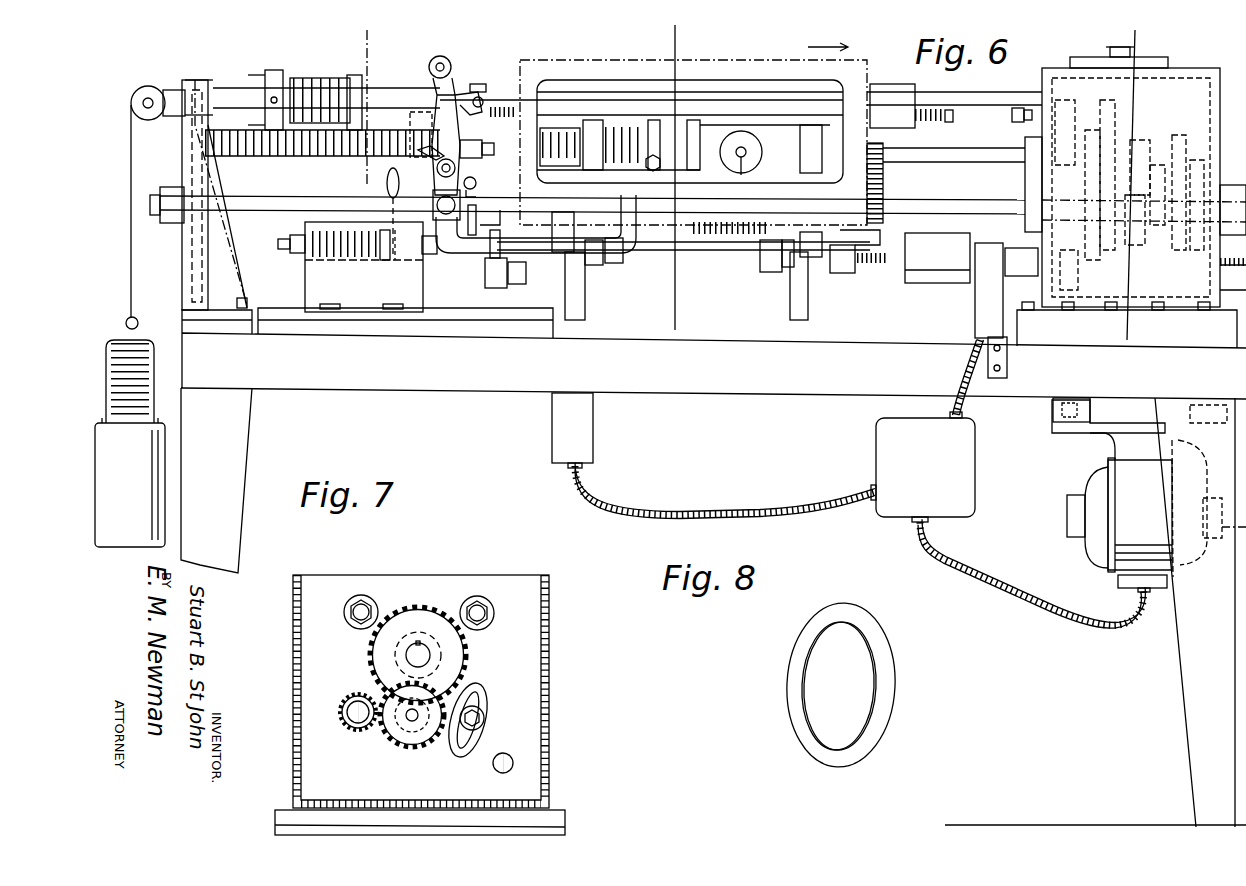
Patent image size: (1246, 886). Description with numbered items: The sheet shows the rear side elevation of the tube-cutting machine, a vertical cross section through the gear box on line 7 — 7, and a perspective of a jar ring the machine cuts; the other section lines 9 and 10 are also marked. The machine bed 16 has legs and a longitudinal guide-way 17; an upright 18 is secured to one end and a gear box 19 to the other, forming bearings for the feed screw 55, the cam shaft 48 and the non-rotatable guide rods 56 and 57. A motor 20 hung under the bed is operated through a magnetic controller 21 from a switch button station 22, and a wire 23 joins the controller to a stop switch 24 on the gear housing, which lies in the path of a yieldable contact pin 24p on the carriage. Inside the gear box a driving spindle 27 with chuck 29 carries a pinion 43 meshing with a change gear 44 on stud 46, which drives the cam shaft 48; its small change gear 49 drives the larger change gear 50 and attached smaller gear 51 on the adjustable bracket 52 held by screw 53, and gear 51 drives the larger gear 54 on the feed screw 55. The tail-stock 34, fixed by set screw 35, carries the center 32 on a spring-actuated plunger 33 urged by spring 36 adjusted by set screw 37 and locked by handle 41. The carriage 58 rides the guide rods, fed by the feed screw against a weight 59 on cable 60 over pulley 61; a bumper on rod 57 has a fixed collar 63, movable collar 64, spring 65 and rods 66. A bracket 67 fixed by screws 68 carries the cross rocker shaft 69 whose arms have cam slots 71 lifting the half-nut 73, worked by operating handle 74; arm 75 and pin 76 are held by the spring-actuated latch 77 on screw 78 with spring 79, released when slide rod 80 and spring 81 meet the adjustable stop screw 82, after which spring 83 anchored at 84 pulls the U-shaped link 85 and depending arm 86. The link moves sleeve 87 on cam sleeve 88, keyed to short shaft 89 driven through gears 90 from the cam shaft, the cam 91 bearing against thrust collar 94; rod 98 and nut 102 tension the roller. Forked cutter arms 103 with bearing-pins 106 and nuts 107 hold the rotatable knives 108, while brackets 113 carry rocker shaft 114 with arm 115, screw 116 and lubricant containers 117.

In FIG. 6, the section line 7- 7 is at (1138, 36).
In FIG. 6, the section line 9- 9 is at (660, 30).
In FIG. 6, the section line 10- 10 is at (365, 30).
In FIG. 6, the machine bed 16 is at (713, 580).
In FIG. 6, the longitudinal guide-way 17 is at (472, 318).
In FIG. 6, the upright 18 is at (192, 252).
In FIG. 6, the gear box 19 is at (1135, 177).
In FIG. 7, the gear box 19 is at (546, 630).
In FIG. 6, the motor 20 is at (1149, 495).
In FIG. 6, the magnetic controller 21 is at (923, 467).
In FIG. 6, the switch button station 22 is at (572, 430).
In FIG. 6, the wire 23 is at (1000, 380).
In FIG. 6, the stop switch 24 is at (978, 300).
In FIG. 6, the yieldable contact pin 24p is at (874, 270).
In FIG. 6, the driving spindle 27 is at (1085, 274).
In FIG. 7, the driving spindle 27 is at (501, 774).
In FIG. 6, the chuck 29 is at (925, 278).
In FIG. 6, the center 32 is at (430, 254).
In FIG. 6, the spring-actuated plunger 33 is at (342, 262).
In FIG. 6, the adjustable tail-stock 34 is at (345, 269).
In FIG. 6, the set screw 35 is at (345, 304).
In FIG. 6, the spring 36 is at (393, 257).
In FIG. 6, the set screw 37 is at (290, 250).
In FIG. 6, the handle 41 is at (384, 213).
In FIG. 6, the pinion 43 is at (1113, 200).
In FIG. 6, the change gear 44 is at (1175, 160).
In FIG. 6, the stud 46 is at (1159, 195).
In FIG. 6, the cam shaft 48 is at (960, 210).
In FIG. 7, the cam shaft 48 is at (350, 704).
In FIG. 6, the small change gear 49 is at (1143, 199).
In FIG. 7, the small change gear 49 is at (348, 725).
In FIG. 6, the larger change gear 50 is at (1144, 165).
In FIG. 7, the larger change gear 50 is at (420, 735).
In FIG. 6, the smaller gear 51 is at (1163, 192).
In FIG. 7, the smaller gear 51 is at (395, 745).
In FIG. 6, the adjustable bracket 52 is at (1079, 195).
In FIG. 7, the adjustable bracket 52 is at (456, 755).
In FIG. 7, the screw 53 is at (484, 717).
In FIG. 6, the larger gear 54 is at (1112, 163).
In FIG. 7, the larger gear 54 is at (468, 640).
In FIG. 6, the feed screw 55 is at (250, 150).
In FIG. 7, the feed screw 55 is at (430, 655).
In FIG. 7, the guide rod 56 is at (488, 608).
In FIG. 6, the guide rod 57 is at (414, 88).
In FIG. 7, the guide rod 57 is at (372, 604).
In FIG. 6, the carriage 58 is at (650, 50).
In FIG. 6, the weight 59 is at (130, 432).
In FIG. 6, the cable 60 is at (133, 227).
In FIG. 6, the pulley 61 is at (152, 112).
In FIG. 6, the fixed collar 63 is at (268, 70).
In FIG. 6, the movable collar 64 is at (362, 75).
In FIG. 6, the spring 65 is at (322, 85).
In FIG. 6, the rods 66 is at (296, 78).
In FIG. 6, the bracket 67 is at (487, 149).
In FIG. 6, the screws 68 is at (477, 186).
In FIG. 6, the cross rocker shaft 69 is at (440, 170).
In FIG. 6, the cam slot 71 is at (486, 149).
In FIG. 6, the half-nut 73 is at (412, 134).
In FIG. 6, the operating handle 74 is at (429, 73).
In FIG. 6, the arm 75 is at (418, 152).
In FIG. 6, the pin 76 is at (468, 92).
In FIG. 6, the spring-actuated latch 77 is at (484, 95).
In FIG. 6, the screw 78 is at (505, 85).
In FIG. 6, the spring 79 is at (520, 105).
In FIG. 6, the slide rod 80 is at (654, 120).
In FIG. 6, the spring 81 is at (885, 110).
In FIG. 6, the adjustable stop screw 82 is at (1018, 108).
In FIG. 6, the spring 83 is at (730, 243).
In FIG. 6, the anchorage point 84 is at (868, 235).
In FIG. 6, the U-shaped link 85 is at (645, 245).
In FIG. 6, the depending arm 86 is at (456, 205).
In FIG. 6, the sleeve 87 is at (660, 150).
In FIG. 6, the cam sleeve 88 is at (615, 127).
In FIG. 6, the short shaft 89 is at (797, 149).
In FIG. 6, the gears 90 is at (884, 186).
In FIG. 6, the cam 91 is at (750, 125).
In FIG. 6, the thrust collar 94 is at (592, 120).
In FIG. 6, the rod 98 is at (741, 172).
In FIG. 6, the nut 102 is at (750, 140).
In FIG. 6, the forked cutter arms 103 is at (616, 265).
In FIG. 6, the bearing-pin 106 is at (605, 255).
In FIG. 6, the nuts 107 is at (790, 290).
In FIG. 6, the rotatable knives 108 is at (820, 290).
In FIG. 6, the bracket 113 is at (689, 274).
In FIG. 6, the rocker shaft 114 is at (683, 275).
In FIG. 6, the arm 115 is at (488, 265).
In FIG. 6, the screw 116 is at (498, 221).
In FIG. 6, the lubricant containers 117 is at (586, 318).